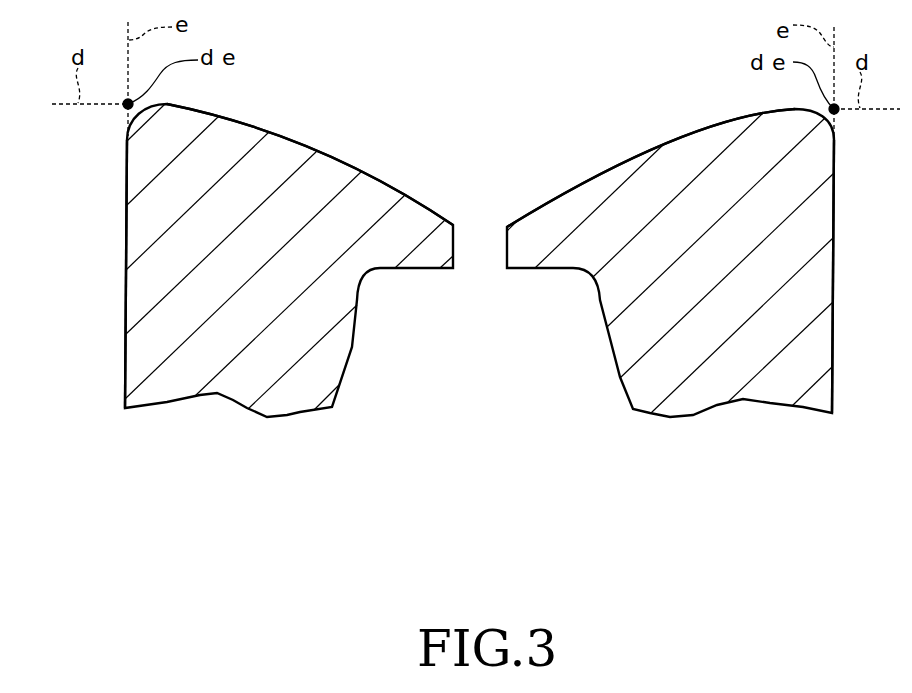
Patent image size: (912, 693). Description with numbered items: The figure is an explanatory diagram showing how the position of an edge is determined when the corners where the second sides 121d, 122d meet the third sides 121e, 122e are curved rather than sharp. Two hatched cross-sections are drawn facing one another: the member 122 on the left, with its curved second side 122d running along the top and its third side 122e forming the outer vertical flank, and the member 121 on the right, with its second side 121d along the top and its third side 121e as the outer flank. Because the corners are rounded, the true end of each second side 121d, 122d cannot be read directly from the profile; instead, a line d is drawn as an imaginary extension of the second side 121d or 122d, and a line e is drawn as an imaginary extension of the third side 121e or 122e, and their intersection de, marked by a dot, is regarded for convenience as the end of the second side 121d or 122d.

The first member 121 is at (687, 390).
The second side 121d is at (627, 153).
The third side 121e is at (833, 353).
The second member 122 is at (243, 370).
The second side 122d is at (348, 110).
The third side 122e is at (127, 237).